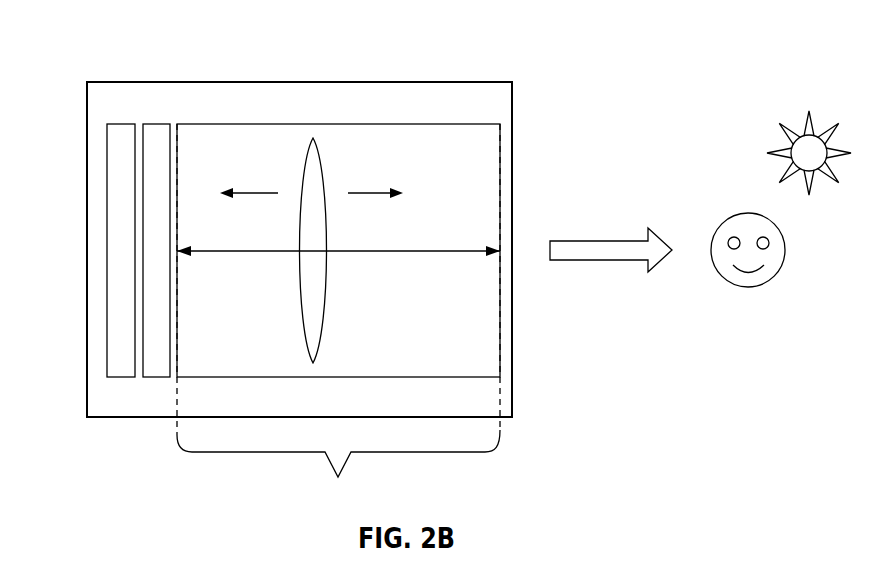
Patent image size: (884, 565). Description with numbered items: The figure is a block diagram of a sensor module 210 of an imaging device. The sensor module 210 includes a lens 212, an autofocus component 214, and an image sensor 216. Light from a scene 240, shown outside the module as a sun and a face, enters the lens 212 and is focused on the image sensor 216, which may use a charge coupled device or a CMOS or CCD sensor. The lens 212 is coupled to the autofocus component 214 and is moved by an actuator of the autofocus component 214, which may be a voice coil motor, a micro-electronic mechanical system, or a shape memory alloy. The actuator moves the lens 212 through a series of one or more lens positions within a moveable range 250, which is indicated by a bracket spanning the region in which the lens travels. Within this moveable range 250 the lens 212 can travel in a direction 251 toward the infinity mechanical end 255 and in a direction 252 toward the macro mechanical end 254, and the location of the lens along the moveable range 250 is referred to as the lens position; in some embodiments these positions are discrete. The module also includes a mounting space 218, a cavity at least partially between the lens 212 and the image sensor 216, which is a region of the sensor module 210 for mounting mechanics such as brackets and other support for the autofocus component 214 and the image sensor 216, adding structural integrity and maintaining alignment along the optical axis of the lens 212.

The sensor module 210 is at (140, 418).
The lens 212 is at (323, 160).
The autofocus component 214 is at (265, 378).
The image sensor 216 is at (122, 124).
The mounting space 218 is at (160, 124).
The scene 240 is at (737, 163).
The moveable range 250 is at (338, 379).
The direction toward the infinity mechanical end 251 is at (249, 192).
The direction toward the macro mechanical end 252 is at (377, 192).
The macro mechanical end 254 is at (500, 124).
The infinity mechanical end 255 is at (177, 124).